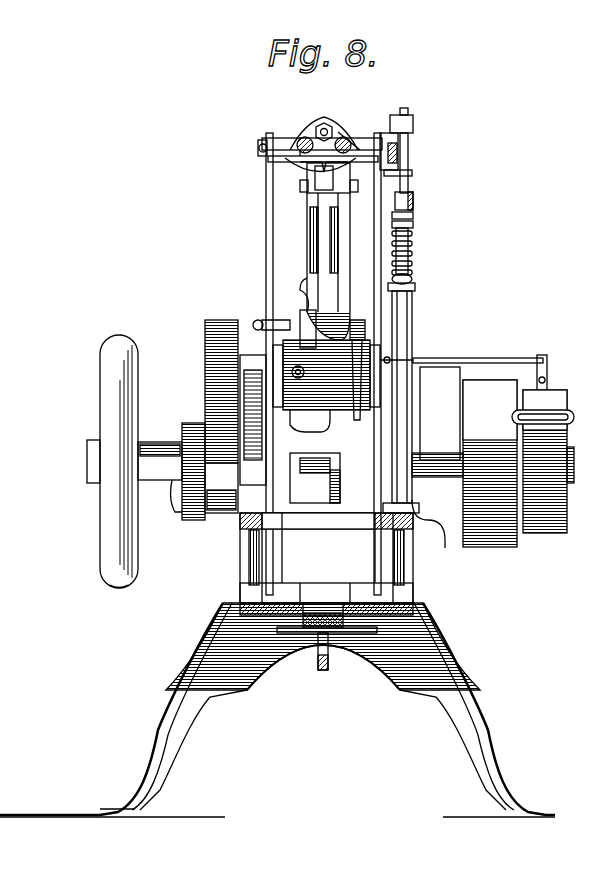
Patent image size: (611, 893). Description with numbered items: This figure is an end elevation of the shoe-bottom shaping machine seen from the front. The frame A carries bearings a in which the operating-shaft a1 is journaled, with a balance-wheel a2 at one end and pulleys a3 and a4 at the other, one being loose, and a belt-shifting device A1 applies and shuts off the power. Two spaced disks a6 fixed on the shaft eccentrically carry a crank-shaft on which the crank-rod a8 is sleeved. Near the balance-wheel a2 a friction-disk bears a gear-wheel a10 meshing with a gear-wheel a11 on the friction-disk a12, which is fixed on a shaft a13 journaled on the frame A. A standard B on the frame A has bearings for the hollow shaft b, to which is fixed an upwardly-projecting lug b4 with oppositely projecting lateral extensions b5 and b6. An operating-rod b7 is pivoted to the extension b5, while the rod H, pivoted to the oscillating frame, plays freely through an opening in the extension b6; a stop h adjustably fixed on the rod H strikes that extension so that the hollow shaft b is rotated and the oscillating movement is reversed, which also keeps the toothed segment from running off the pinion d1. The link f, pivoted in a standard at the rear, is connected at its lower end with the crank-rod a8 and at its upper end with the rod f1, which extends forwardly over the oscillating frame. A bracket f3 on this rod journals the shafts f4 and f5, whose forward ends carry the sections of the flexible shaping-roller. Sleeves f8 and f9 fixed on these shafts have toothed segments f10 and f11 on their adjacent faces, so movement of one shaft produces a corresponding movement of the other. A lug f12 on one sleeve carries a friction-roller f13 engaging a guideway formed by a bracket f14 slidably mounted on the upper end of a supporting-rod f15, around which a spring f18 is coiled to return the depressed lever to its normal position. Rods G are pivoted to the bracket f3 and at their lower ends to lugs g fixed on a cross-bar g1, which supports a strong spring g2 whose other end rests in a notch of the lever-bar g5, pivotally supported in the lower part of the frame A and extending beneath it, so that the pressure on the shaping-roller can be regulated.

The rods G is at (266, 206).
The shaft f4 is at (300, 137).
The bracket f3 is at (322, 122).
The rod f1 is at (345, 130).
The shaft f5 is at (352, 138).
The sleeve f8 is at (251, 150).
The toothed segment f10 is at (322, 170).
The sleeve f9 is at (320, 160).
The link f is at (314, 228).
The bracket f14 is at (413, 128).
The friction-roller f13 is at (397, 150).
The toothed segment f11 is at (405, 176).
The lug f12 is at (413, 200).
The supporting-rod f15 is at (413, 222).
The spring f18 is at (412, 246).
The stop h is at (412, 288).
The rod H is at (412, 313).
The lateral extension b5 is at (300, 325).
The lateral extension b6 is at (296, 290).
The standard B is at (326, 382).
The hollow shaft b is at (340, 405).
The operating-rod b7 is at (262, 327).
The lug b4 is at (250, 380).
The crank-rod a8 is at (318, 503).
The disks a6 is at (340, 500).
The gear-wheel a10 is at (212, 410).
The gear-wheel a11 is at (194, 520).
The friction-disk a12 is at (222, 513).
The shaft a13 is at (165, 480).
The balance-wheel a2 is at (101, 461).
The bearings a is at (172, 505).
The belt-shifting device A1 is at (479, 401).
The pinion d1 is at (380, 360).
The pulley a3 is at (493, 547).
The pulley a4 is at (548, 533).
The operating-shaft a1 is at (572, 483).
The lugs g is at (326, 558).
The cross-bar g1 is at (326, 576).
The spring g2 is at (318, 627).
The lever-bar g5 is at (330, 665).
The frame A is at (277, 710).